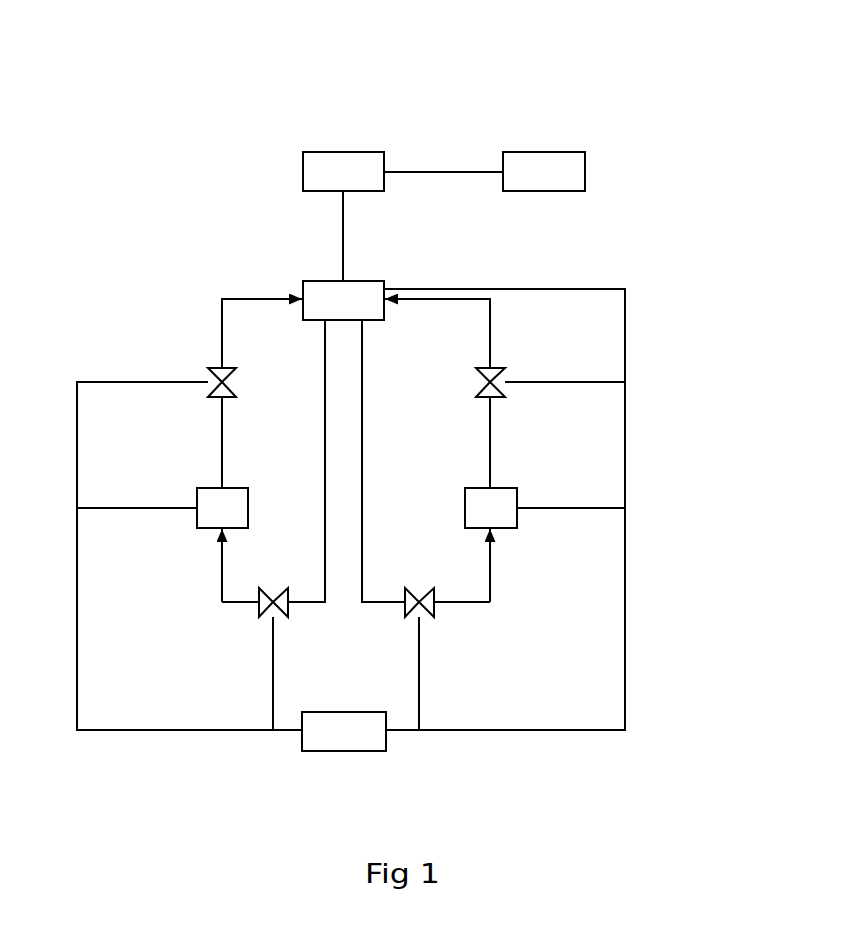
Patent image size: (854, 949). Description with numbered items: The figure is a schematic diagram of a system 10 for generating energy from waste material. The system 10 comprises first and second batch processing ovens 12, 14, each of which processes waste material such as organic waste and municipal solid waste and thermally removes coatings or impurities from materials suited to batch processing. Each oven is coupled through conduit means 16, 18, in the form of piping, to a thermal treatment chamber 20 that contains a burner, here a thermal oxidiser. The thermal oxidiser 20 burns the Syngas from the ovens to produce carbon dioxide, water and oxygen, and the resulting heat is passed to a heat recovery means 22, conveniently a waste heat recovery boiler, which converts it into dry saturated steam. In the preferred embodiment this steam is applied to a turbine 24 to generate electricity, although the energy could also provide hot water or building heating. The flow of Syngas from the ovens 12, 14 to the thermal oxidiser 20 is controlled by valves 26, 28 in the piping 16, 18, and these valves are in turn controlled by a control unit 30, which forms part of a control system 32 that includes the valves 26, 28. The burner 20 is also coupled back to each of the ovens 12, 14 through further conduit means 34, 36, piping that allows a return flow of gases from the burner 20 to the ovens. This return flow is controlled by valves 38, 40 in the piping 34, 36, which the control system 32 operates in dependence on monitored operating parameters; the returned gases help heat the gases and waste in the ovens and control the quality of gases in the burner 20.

The system 10 is at (431, 63).
The first batch processing oven 12 is at (207, 500).
The second batch processing oven 14 is at (510, 500).
The conduit means 16 is at (219, 323).
The conduit means 18 is at (492, 335).
The thermal treatment chamber 20 is at (320, 292).
The heat recovery means 22 is at (340, 168).
The turbine 24 is at (542, 168).
The valve 26 is at (233, 387).
The valve 28 is at (483, 380).
The control unit 30 is at (337, 740).
The control system 32 is at (642, 677).
The further conduit means 34 is at (323, 457).
The further conduit means 36 is at (363, 448).
The valve 38 is at (260, 610).
The valve 40 is at (433, 610).